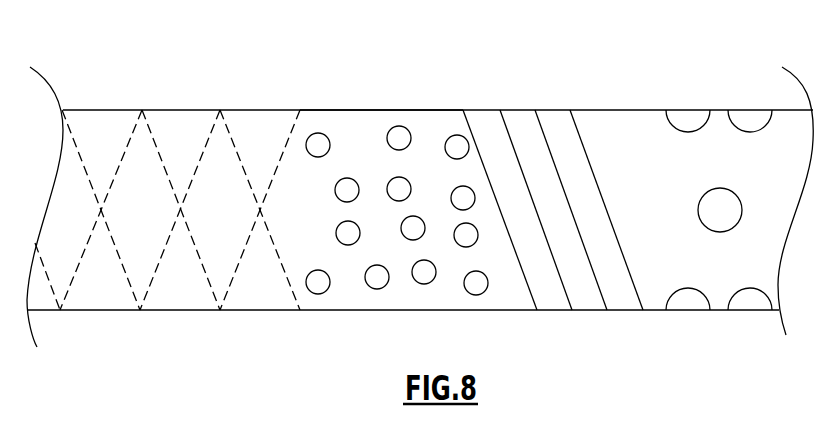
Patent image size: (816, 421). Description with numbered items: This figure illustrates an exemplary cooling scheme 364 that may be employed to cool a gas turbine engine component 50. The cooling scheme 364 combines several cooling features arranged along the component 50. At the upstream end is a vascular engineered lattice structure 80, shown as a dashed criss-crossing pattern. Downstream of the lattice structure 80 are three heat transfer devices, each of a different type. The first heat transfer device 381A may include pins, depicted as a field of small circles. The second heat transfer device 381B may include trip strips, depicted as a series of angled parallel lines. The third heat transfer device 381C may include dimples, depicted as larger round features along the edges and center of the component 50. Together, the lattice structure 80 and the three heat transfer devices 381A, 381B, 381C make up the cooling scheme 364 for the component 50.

The gas turbine engine component 50 is at (220, 85).
The vascular engineered lattice structure 80 is at (128, 282).
The cooling scheme 364 is at (412, 116).
The first heat transfer device 381A is at (374, 291).
The second heat transfer device 381B is at (594, 281).
The third heat transfer device 381C is at (762, 293).